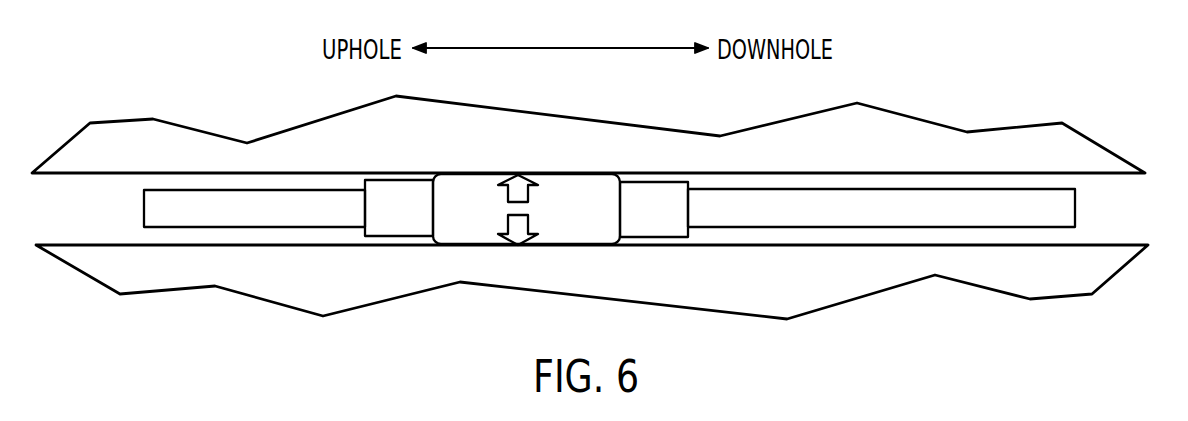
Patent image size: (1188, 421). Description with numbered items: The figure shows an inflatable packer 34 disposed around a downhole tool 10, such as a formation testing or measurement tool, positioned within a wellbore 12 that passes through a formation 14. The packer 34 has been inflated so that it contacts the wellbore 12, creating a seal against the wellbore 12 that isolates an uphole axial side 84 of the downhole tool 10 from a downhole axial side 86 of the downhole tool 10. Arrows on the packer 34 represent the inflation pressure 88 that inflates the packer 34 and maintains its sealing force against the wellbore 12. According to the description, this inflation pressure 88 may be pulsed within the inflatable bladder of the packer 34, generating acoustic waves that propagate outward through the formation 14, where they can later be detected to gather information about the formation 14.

The downhole tool 10 is at (609, 278).
The wellbore 12 is at (295, 246).
The formation 14 is at (421, 151).
The inflatable packer 34 is at (470, 232).
The uphole axial side 84 is at (53, 223).
The downhole axial side 86 is at (1111, 223).
The inflation pressure 88 is at (518, 230).